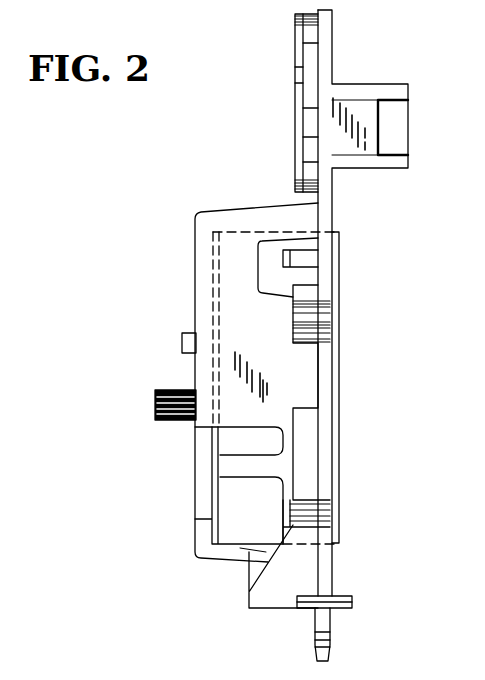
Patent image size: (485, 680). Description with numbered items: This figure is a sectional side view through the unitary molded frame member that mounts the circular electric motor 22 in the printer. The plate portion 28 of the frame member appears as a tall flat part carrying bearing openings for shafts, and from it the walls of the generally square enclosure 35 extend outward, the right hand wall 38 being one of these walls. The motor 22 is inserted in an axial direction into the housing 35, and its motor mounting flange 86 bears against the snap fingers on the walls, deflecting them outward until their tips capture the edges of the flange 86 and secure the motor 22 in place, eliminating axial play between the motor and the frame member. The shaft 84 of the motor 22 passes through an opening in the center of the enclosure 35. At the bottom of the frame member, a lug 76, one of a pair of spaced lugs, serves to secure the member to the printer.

The electric motor 22 is at (340, 350).
The plate portion 28 is at (330, 35).
The enclosure 35 is at (238, 205).
The right hand wall 38 is at (266, 334).
The lug 76 is at (332, 625).
The shaft 84 is at (180, 391).
The motor mounting flange 86 is at (217, 507).